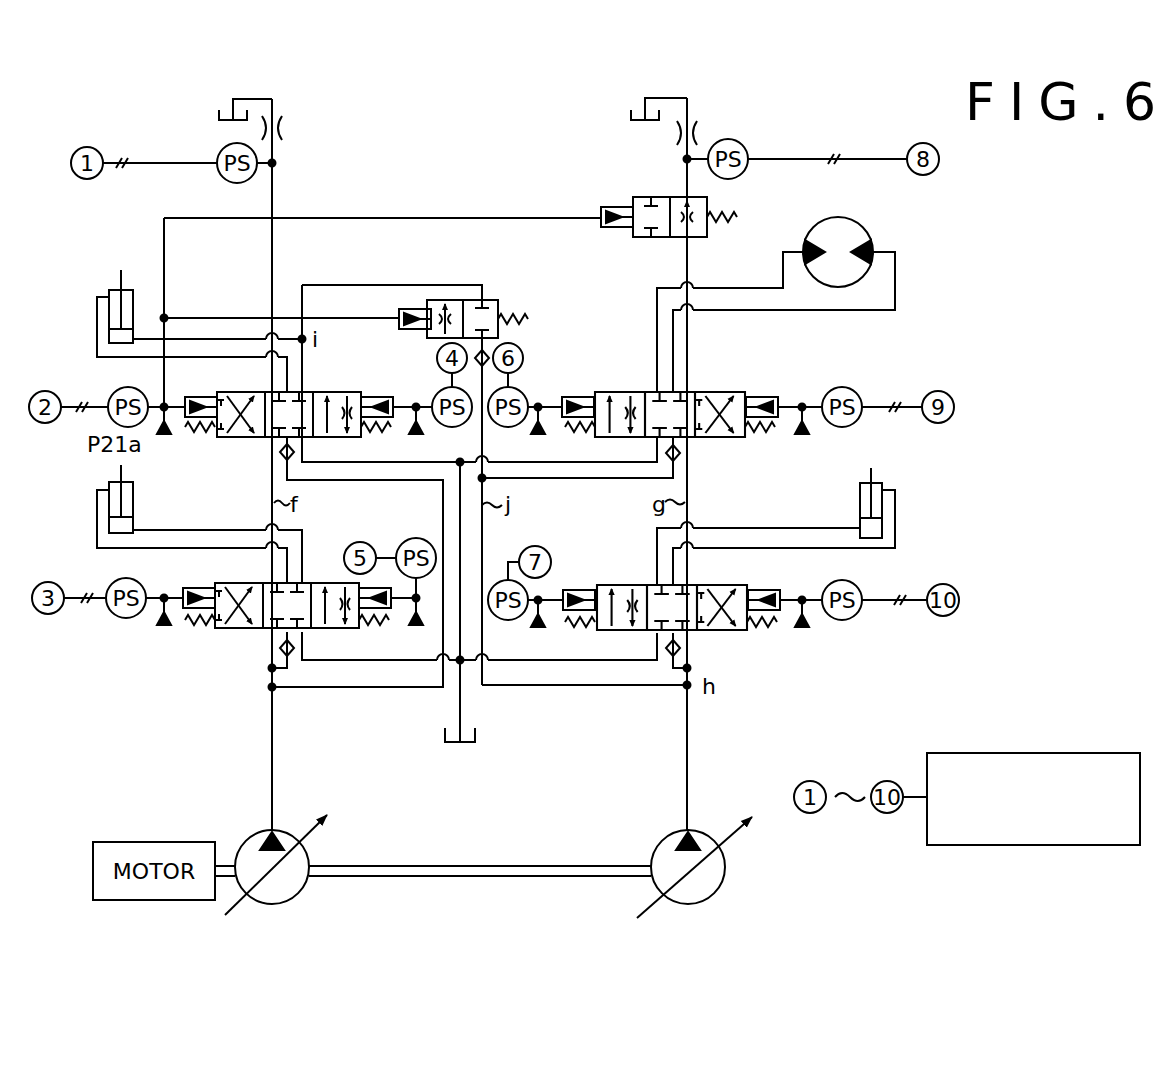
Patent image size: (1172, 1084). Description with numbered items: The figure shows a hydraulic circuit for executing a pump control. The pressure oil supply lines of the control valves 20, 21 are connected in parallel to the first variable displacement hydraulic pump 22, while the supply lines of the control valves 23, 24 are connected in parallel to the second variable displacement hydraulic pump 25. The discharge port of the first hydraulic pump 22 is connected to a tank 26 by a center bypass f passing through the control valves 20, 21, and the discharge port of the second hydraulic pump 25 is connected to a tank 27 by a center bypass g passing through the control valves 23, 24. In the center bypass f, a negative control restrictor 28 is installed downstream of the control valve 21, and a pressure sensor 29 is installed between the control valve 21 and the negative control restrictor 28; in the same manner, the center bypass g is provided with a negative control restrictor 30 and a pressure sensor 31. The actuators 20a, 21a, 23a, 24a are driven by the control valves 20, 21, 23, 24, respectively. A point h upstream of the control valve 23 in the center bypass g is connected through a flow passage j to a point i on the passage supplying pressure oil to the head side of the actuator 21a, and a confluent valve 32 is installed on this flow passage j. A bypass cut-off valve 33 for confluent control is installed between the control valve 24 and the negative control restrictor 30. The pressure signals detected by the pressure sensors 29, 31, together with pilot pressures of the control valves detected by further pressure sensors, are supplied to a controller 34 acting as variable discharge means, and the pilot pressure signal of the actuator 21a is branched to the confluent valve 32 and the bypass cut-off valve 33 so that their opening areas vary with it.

The control valve 20 is at (243, 641).
The actuator 20a is at (90, 503).
The control valve 21 is at (243, 448).
The actuator 21a is at (88, 307).
The first variable displacement hydraulic pump 22 is at (303, 893).
The control valve 23 is at (728, 643).
The actuator 23a is at (905, 497).
The control valve 24 is at (713, 449).
The actuator 24a is at (878, 233).
The second variable displacement hydraulic pump 25 is at (720, 893).
The tank 26 is at (219, 114).
The tank 27 is at (629, 115).
The negative control restrictor 28 is at (288, 128).
The pressure sensor 29 is at (224, 147).
The negative control restrictor 30 is at (700, 132).
The pressure sensor 31 is at (745, 147).
The confluent valve 32 is at (489, 298).
The bypass cut-off valve 33 is at (641, 238).
The controller 34 is at (1104, 752).